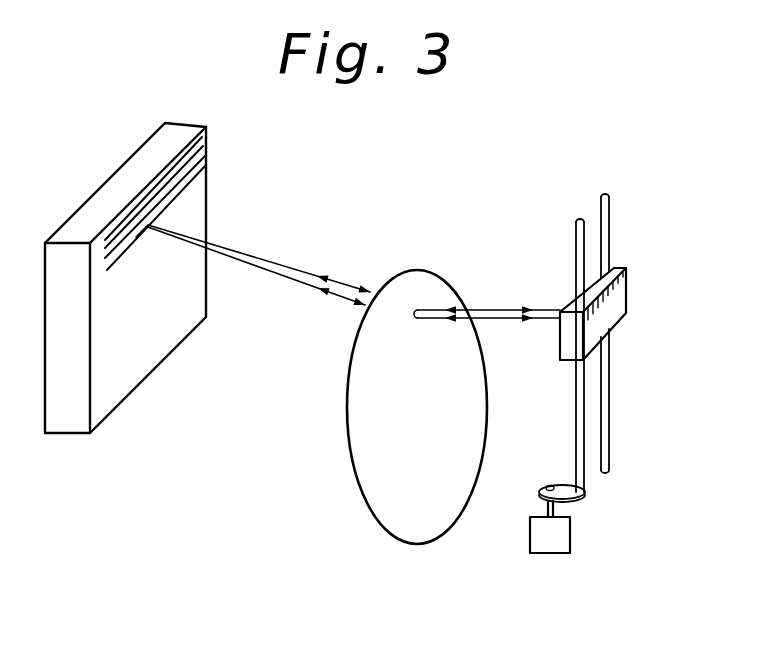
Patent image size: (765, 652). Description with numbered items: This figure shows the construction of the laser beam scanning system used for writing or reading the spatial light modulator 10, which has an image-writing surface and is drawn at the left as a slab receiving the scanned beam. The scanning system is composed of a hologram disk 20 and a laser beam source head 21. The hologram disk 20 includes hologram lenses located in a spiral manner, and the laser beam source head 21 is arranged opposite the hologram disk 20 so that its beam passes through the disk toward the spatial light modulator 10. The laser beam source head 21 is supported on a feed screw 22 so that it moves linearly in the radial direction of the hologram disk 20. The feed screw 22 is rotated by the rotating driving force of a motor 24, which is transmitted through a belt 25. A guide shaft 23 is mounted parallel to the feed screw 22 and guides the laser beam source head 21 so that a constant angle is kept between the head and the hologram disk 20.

The spatial light modulator 10 is at (115, 182).
The hologram disk 20 is at (448, 292).
The laser beam source head 21 is at (626, 297).
The feed screw 22 is at (578, 218).
The guide shaft 23 is at (604, 193).
The motor 24 is at (562, 540).
The belt 25 is at (584, 498).